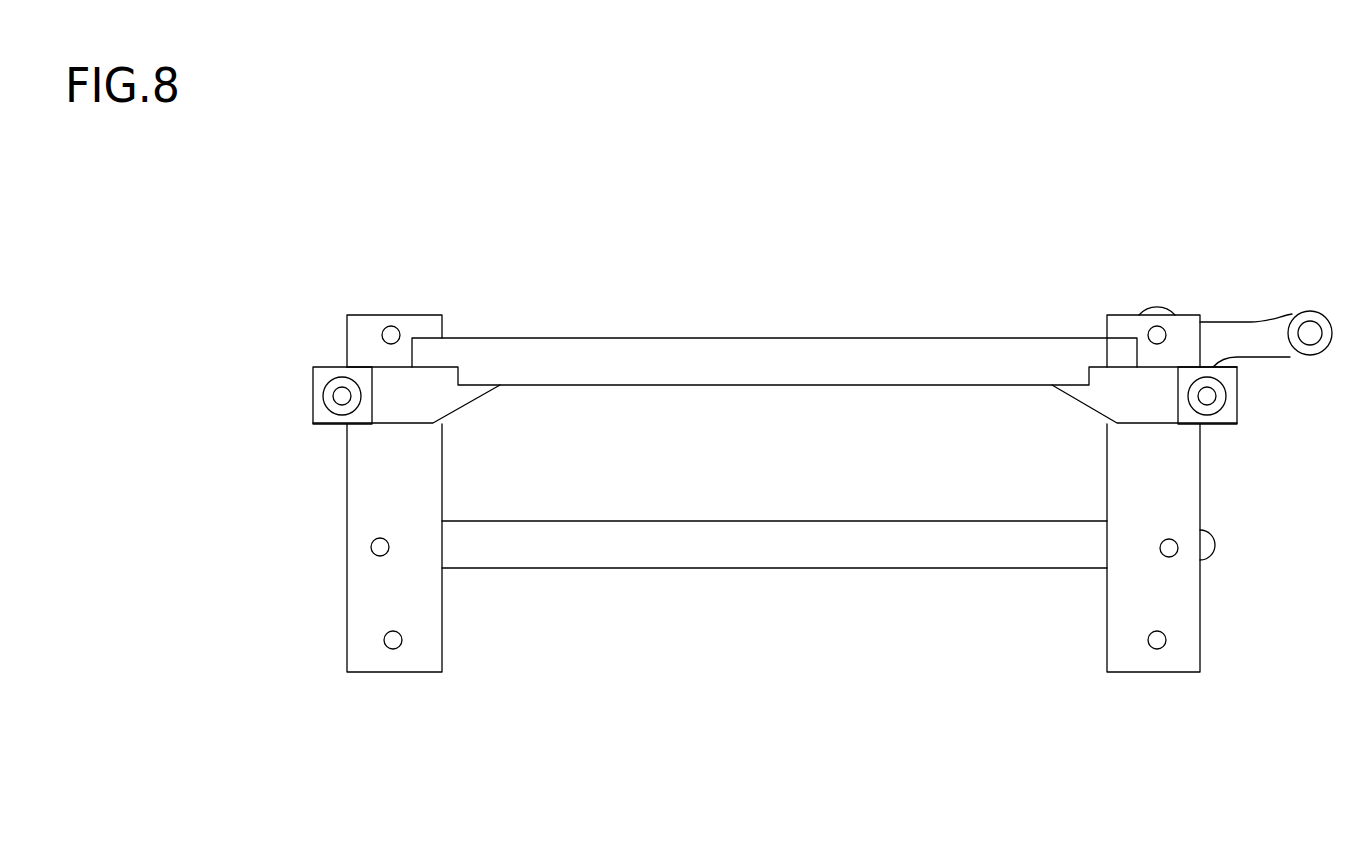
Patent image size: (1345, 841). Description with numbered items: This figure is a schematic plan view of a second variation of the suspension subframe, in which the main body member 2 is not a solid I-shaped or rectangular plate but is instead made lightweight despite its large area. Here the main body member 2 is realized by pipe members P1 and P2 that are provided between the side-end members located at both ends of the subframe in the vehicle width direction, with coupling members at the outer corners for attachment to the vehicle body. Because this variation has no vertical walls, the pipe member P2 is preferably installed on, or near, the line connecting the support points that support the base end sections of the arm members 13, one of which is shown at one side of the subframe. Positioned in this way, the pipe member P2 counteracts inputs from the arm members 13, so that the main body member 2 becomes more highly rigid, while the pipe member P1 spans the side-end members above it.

The main body member 2 is at (912, 280).
The arm member 13 is at (1262, 330).
The pipe member P1 is at (816, 347).
The pipe member P2 is at (815, 560).